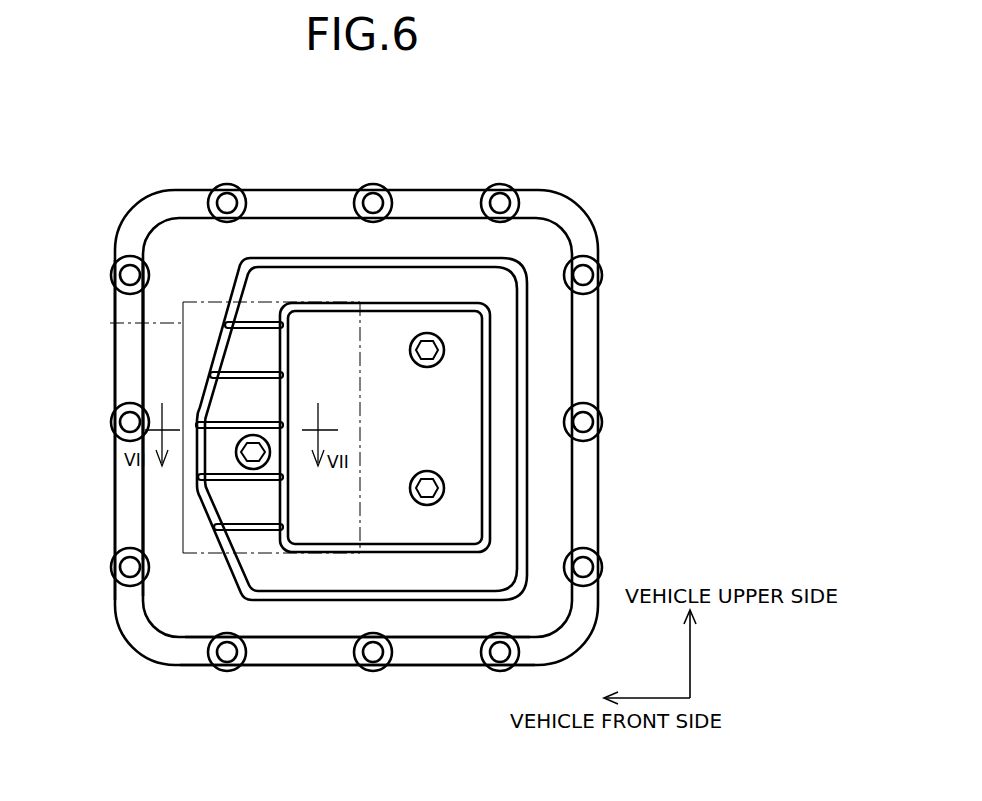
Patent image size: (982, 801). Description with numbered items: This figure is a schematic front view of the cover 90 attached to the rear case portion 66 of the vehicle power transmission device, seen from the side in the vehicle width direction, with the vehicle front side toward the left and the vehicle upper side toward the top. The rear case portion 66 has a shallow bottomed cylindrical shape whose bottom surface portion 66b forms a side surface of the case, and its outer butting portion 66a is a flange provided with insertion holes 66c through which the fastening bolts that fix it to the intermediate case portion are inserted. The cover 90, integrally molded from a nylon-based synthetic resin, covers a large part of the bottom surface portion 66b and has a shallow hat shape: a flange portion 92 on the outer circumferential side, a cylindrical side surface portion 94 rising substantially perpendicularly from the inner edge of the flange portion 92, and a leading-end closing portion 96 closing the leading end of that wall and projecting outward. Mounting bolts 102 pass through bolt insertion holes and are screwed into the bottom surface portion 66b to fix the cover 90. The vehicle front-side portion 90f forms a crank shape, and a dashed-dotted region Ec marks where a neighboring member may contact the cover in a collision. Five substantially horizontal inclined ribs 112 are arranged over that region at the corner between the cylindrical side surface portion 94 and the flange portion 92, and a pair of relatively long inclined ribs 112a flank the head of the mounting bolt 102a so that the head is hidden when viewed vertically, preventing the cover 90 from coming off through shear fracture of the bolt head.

The rear case portion 66 is at (355, 409).
The butting portion 66a is at (152, 640).
The bottom surface portion 66b is at (290, 620).
The insertion holes 66c is at (373, 200).
The cover 90 is at (349, 373).
The vehicle front-side portion 90f is at (196, 252).
The flange portion 92 is at (507, 400).
The cylindrical side surface portion 94 is at (385, 353).
The leading-end closing portion 96 is at (448, 421).
The mounting bolts 102 is at (432, 350).
The mounting bolt 102a is at (246, 456).
The inclined rib 112 is at (237, 320).
The inclined ribs 112a is at (210, 423).
The region Ec is at (131, 324).